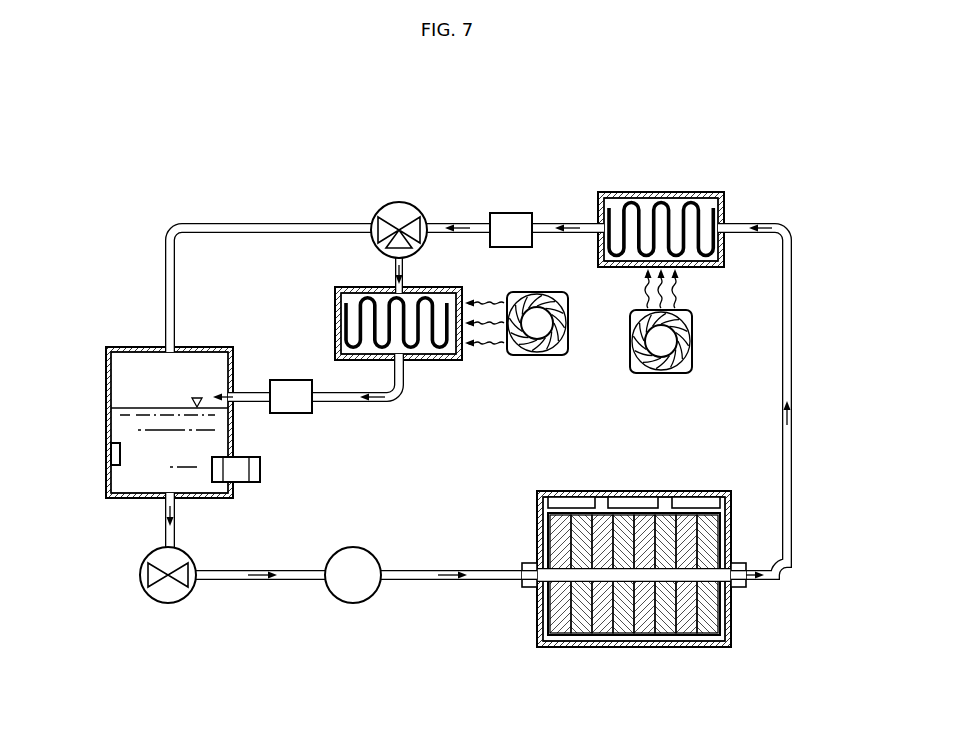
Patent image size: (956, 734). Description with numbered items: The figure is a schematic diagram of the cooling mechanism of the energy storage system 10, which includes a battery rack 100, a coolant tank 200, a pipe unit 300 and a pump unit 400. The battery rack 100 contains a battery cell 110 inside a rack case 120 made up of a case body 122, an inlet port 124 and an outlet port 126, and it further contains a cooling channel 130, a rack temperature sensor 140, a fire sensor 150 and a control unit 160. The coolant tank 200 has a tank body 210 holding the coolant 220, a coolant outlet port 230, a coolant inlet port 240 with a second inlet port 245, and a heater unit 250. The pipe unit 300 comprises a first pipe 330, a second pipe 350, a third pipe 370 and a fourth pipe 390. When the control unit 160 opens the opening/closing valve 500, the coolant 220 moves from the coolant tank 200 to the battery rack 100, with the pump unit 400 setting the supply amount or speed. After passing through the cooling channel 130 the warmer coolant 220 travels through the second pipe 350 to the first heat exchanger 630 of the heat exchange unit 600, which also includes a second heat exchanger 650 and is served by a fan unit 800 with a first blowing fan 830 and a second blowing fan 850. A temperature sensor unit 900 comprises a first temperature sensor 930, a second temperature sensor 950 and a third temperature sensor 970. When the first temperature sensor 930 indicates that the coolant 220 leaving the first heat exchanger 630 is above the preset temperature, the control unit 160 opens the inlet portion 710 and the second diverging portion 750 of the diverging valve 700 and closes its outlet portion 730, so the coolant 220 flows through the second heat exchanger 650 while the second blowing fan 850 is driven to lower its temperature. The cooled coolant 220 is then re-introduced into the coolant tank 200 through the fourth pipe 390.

The energy storage system 10 is at (165, 139).
The battery rack 100 is at (638, 549).
The battery cell 110 is at (688, 622).
The rack case 120 is at (638, 579).
The case body 122 is at (731, 614).
The inlet port 124 is at (524, 563).
The outlet port 126 is at (744, 563).
The cooling channel 130 is at (626, 585).
The rack temperature sensor 140 is at (571, 502).
The fire sensor 150 is at (692, 502).
The control unit 160 is at (631, 502).
The coolant tank 200 is at (183, 393).
The tank body 210 is at (106, 480).
The coolant 220 is at (120, 425).
The coolant outlet port 230 is at (176, 505).
The coolant inlet port 240 is at (163, 345).
The second inlet port 245 is at (233, 395).
The heater unit 250 is at (260, 470).
The pipe unit 300 is at (782, 380).
The first pipe 330 is at (262, 569).
The second pipe 350 is at (793, 346).
The third pipe 370 is at (459, 223).
The fourth pipe 390 is at (404, 385).
The pump unit 400 is at (353, 547).
The opening/closing valve 500 is at (140, 575).
The heat exchange unit 600 is at (663, 197).
The first heat exchanger 630 is at (658, 192).
The second heat exchanger 650 is at (335, 306).
The diverging valve 700 is at (385, 189).
The inlet portion 710 is at (408, 210).
The outlet portion 730 is at (385, 210).
The second diverging portion 750 is at (380, 250).
The fan unit 800 is at (605, 347).
The first blowing fan 830 is at (692, 341).
The second blowing fan 850 is at (568, 323).
The temperature sensor unit 900 is at (524, 182).
The first temperature sensor 930 is at (513, 213).
The second temperature sensor 950 is at (291, 380).
The third temperature sensor 970 is at (110, 453).